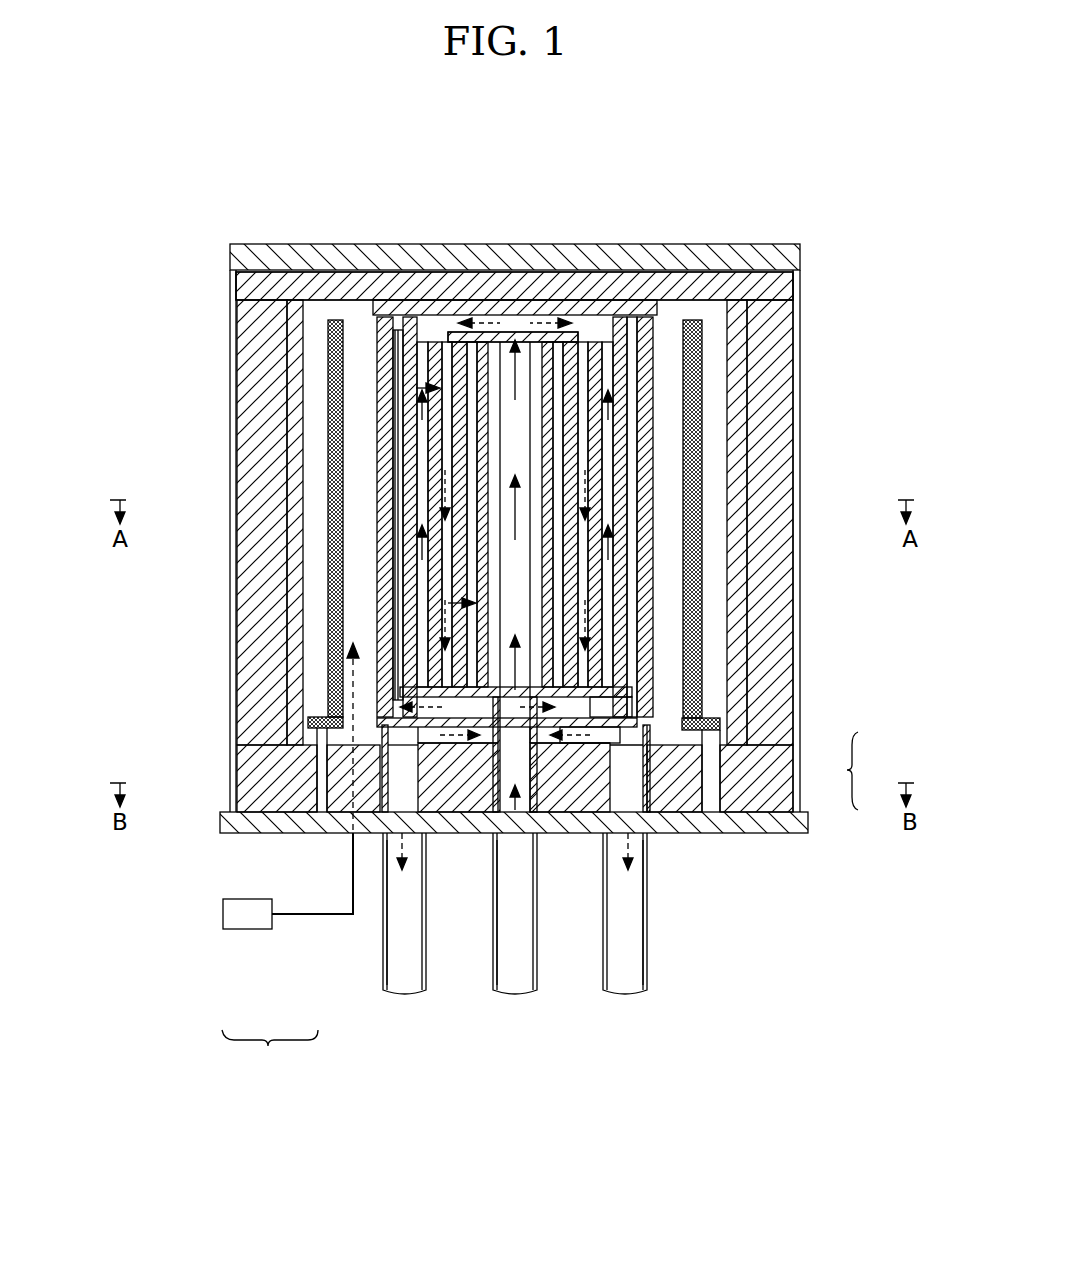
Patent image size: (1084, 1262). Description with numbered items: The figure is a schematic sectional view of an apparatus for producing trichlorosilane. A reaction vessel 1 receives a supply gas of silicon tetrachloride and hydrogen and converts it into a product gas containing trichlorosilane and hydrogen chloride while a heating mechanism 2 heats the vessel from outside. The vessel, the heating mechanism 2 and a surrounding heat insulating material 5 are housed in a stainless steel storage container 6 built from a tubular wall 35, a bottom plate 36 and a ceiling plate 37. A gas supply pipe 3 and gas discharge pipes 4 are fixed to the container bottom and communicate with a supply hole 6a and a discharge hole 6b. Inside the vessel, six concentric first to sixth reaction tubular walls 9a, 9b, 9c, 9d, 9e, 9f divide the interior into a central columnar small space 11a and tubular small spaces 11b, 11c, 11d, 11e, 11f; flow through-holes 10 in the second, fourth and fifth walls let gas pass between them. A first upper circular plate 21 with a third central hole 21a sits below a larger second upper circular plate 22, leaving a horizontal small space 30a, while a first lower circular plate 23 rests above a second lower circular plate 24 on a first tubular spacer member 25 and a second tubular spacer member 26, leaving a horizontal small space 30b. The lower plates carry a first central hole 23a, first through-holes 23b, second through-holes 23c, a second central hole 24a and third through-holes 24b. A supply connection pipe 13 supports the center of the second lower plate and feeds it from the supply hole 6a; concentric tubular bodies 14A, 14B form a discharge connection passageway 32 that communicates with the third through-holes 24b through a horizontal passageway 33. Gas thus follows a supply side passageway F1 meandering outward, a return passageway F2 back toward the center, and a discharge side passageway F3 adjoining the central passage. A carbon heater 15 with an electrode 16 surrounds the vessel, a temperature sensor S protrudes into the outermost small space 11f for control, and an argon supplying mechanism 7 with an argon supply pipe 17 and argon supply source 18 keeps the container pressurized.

The reaction vessel 1 is at (780, 278).
The heating mechanism 2 is at (867, 771).
The gas supply pipe 3 is at (525, 995).
The gas discharge pipes 4 is at (410, 995).
The heat insulating material 5 is at (745, 272).
The storage container 6 is at (228, 312).
The supply hole 6a is at (497, 870).
The discharge hole 6b is at (385, 860).
The argon supplying mechanism 7 is at (270, 1053).
The first reaction tubular wall 9a is at (548, 600).
The second reaction tubular wall 9b is at (556, 545).
The third reaction tubular wall 9c is at (570, 520).
The fourth reaction tubular wall 9d is at (583, 490).
The fifth reaction tubular wall 9e is at (606, 455).
The sixth reaction tubular wall 9f is at (632, 420).
The flow through-holes 10 is at (385, 320).
The central columnar small space 11a is at (432, 392).
The tubular small space 11b is at (420, 515).
The tubular small space 11c is at (470, 600).
The tubular small space 11d is at (455, 442).
The tubular small space 11e is at (446, 540).
The outermost tubular small space 11f is at (480, 470).
The supply connection pipe 13 is at (512, 690).
The outside tubular body 14A is at (625, 745).
The inside tubular body 14B is at (400, 745).
The heater 15 is at (652, 735).
The electrode 16 is at (652, 770).
The argon supply pipe 17 is at (298, 930).
The argon supply source 18 is at (243, 930).
The first upper circular plate 21 is at (595, 342).
The third central hole 21a is at (526, 332).
The second upper circular plate 22 is at (662, 330).
The first lower circular plate 23 is at (390, 722).
The first central hole 23a is at (560, 745).
The first through-holes 23b is at (605, 705).
The second through-holes 23c is at (600, 735).
The second lower circular plate 24 is at (300, 760).
The second central hole 24a is at (490, 760).
The third through-holes 24b is at (580, 760).
The first tubular spacer member 25 is at (500, 745).
The second tubular spacer member 26 is at (430, 745).
The horizontal small space 30a is at (470, 330).
The horizontal small space 30b is at (410, 692).
The discharge connection passageway 32 is at (680, 770).
The horizontal passageway 33 is at (383, 790).
The tubular wall 35 is at (326, 336).
The bottom plate 36 is at (230, 826).
The ceiling plate 37 is at (292, 244).
The temperature sensor S is at (405, 332).
The supply side passageway F1 is at (412, 388).
The return passageway F2 is at (345, 730).
The discharge side passageway F3 is at (446, 603).